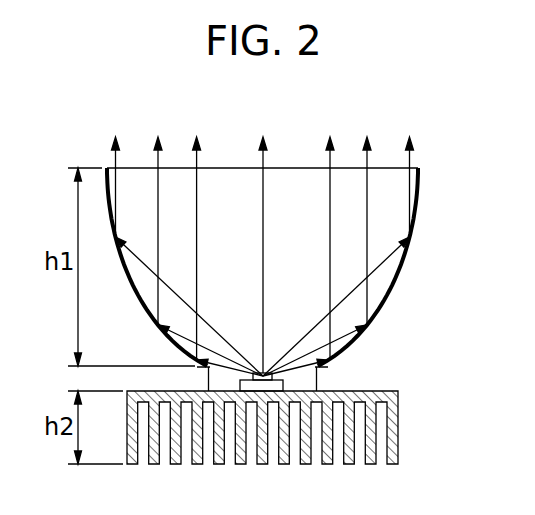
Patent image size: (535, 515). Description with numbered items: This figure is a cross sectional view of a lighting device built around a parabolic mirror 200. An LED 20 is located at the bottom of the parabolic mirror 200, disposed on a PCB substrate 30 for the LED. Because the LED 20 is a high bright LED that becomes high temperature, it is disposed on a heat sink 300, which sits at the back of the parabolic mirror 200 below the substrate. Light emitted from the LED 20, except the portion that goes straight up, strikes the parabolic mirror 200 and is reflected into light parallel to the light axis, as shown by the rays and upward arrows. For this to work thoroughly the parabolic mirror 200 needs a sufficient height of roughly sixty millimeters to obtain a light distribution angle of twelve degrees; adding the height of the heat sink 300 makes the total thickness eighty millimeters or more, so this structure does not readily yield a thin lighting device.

The parabolic mirror 200 is at (403, 266).
The LED 20 is at (273, 376).
The PCB substrate 30 is at (284, 386).
The heat sink 300 is at (398, 435).